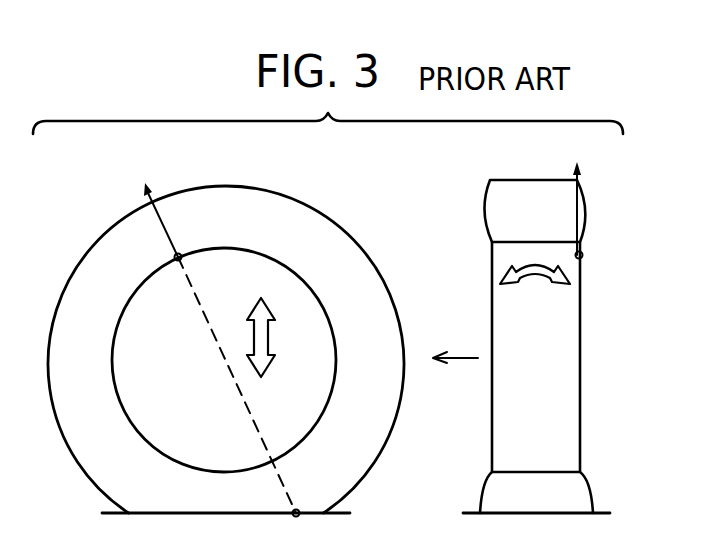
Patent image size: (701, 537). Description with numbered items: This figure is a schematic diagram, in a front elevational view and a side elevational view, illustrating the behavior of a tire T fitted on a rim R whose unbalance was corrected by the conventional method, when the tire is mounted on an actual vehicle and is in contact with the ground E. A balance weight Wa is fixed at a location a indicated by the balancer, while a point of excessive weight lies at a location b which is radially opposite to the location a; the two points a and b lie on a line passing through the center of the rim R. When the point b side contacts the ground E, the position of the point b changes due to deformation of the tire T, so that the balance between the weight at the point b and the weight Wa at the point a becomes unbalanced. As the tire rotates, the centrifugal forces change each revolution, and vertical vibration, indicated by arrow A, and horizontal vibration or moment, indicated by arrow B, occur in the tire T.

The tire T is at (343, 248).
The rim R is at (568, 430).
The ground E is at (345, 511).
The location a is at (183, 247).
The weight Wa is at (188, 233).
The location b is at (303, 506).
The arrow A is at (263, 322).
The arrow B is at (535, 291).